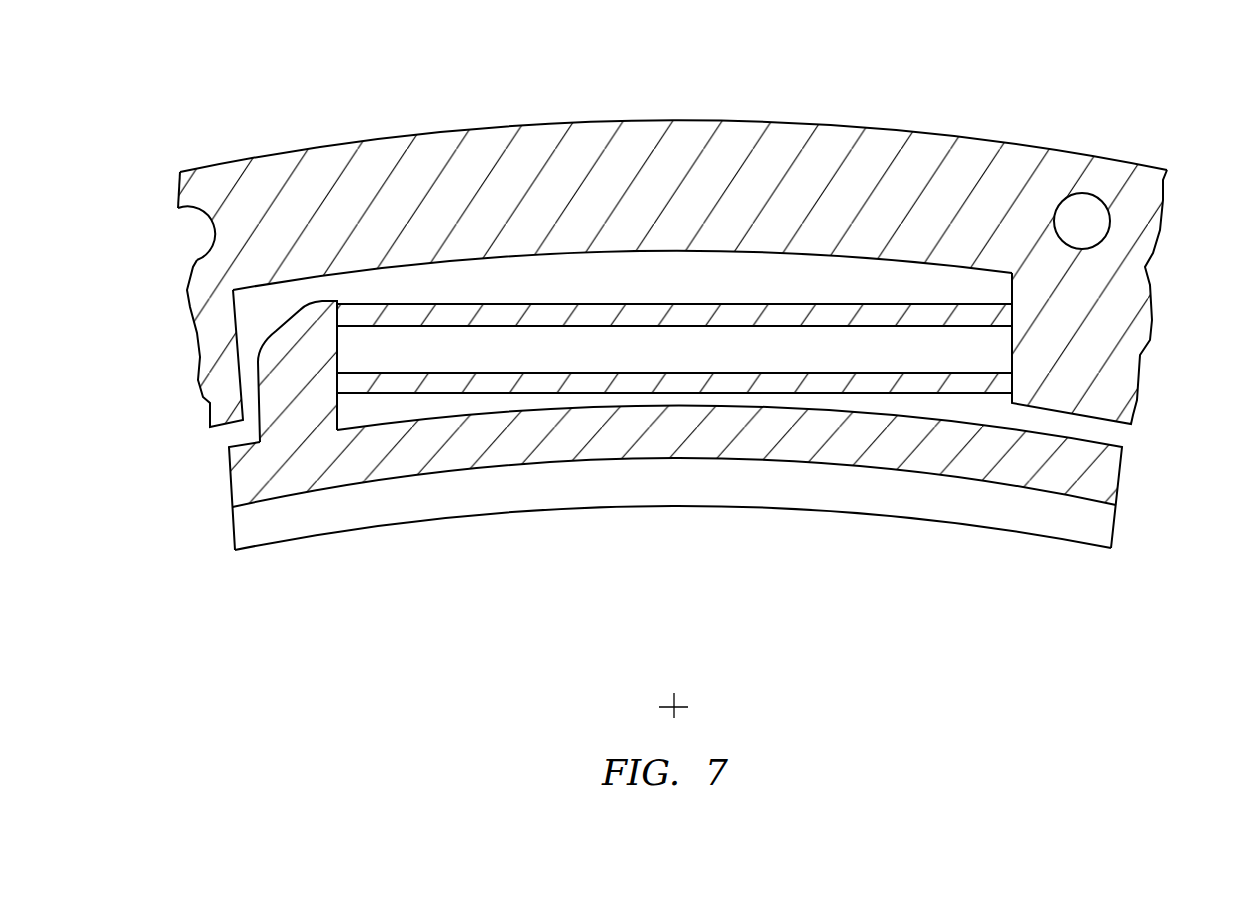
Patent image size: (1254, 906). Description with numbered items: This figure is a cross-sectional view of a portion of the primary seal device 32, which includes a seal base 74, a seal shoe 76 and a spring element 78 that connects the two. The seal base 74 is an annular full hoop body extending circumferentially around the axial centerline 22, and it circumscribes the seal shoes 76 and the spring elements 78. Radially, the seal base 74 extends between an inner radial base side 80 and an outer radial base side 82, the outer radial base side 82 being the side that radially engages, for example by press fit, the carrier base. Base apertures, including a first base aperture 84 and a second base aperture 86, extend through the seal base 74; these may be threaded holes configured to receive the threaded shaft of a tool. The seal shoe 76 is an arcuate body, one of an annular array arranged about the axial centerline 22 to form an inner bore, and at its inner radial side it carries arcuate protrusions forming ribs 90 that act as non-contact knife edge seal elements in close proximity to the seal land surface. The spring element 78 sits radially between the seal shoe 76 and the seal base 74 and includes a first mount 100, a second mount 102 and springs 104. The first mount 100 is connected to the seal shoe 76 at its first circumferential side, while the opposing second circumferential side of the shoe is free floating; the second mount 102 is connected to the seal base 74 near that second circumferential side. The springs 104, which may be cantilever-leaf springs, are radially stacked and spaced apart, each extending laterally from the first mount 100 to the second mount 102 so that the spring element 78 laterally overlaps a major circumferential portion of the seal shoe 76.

The axial centerline 22 is at (677, 705).
The primary seal device 32 is at (1090, 105).
The seal base 74 is at (560, 123).
The seal shoe 76 is at (316, 537).
The spring element 78 is at (674, 299).
The inner radial base side 80 is at (437, 263).
The outer radial base side 82 is at (415, 137).
The first base aperture 84 is at (1082, 222).
The second base aperture 86 is at (197, 233).
The rib 90 is at (1011, 532).
The first mount 100 is at (257, 382).
The second mount 102 is at (1134, 359).
The spring 104 is at (697, 303).